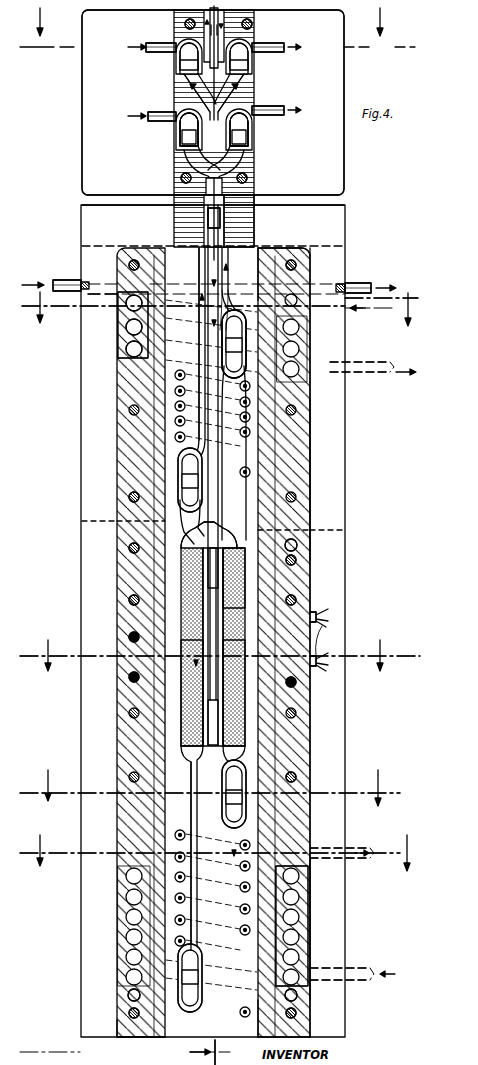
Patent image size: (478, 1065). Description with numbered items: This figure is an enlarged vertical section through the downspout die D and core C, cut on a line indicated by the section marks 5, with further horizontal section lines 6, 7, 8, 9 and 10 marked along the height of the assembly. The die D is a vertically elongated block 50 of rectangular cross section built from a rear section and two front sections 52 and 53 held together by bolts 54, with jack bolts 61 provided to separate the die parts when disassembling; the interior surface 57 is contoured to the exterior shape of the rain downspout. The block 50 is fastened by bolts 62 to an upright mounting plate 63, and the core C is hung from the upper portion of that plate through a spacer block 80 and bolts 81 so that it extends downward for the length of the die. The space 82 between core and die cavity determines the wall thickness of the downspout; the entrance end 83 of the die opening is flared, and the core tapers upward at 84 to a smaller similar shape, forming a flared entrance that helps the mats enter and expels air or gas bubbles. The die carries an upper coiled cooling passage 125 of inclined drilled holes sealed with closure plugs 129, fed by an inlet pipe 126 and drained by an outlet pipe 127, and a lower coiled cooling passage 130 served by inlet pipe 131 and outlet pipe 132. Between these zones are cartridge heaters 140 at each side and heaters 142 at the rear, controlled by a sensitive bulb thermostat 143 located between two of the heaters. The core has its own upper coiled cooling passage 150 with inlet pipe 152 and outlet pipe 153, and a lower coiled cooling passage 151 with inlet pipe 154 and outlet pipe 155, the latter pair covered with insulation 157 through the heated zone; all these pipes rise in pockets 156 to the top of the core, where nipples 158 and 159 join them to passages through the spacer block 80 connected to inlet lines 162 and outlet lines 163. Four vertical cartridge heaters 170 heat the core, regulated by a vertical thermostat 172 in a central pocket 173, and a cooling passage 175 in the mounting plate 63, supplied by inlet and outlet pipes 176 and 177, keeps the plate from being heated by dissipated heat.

The section line 5— 5 is at (208, 1053).
The section line 6— 6 is at (202, 17).
The section line 7— 7 is at (222, 317).
The section line 8— 8 is at (220, 648).
The section line 9— 9 is at (218, 843).
The section line 10— 10 is at (210, 780).
The die block 50 is at (320, 438).
The front die section 52 is at (118, 1038).
The front die section 53 is at (308, 1004).
The bolts 54 is at (292, 266).
The interior surface 57 is at (184, 706).
The jack bolts 61 is at (132, 495).
The bolts 62 is at (118, 538).
The mounting plate 63 is at (82, 168).
The spacer block 80 is at (240, 206).
The bolts 81 is at (183, 20).
The space 82 is at (238, 538).
The entrance end of die opening 83 is at (264, 250).
The tapered portion of core 84 is at (264, 238).
The coiled cooling passage 125 is at (118, 364).
The inlet pipe 126 is at (384, 300).
The outlet pipe 127 is at (364, 374).
The closure plugs 129 is at (118, 346).
The coiled cooling passage 130 is at (312, 913).
The inlet pipe 131 is at (372, 968).
The outlet pipe 132 is at (358, 848).
The heaters 140 is at (132, 599).
The heaters 142 is at (320, 640).
The thermostat 143 is at (132, 636).
The coiled cooling passage 150 is at (234, 371).
The coiled cooling passage 151 is at (176, 831).
The inlet pipe 152 is at (180, 143).
The outlet pipe 153 is at (247, 146).
The inlet pipe 154 is at (208, 93).
The outlet pipe 155 is at (229, 93).
The pockets 156 is at (206, 225).
The insulation 157 is at (210, 579).
The nipple 158 is at (180, 59).
The nipple 159 is at (248, 58).
The inlet lines 162 is at (146, 41).
The outlet lines 163 is at (285, 45).
The cartridge type heaters 170 is at (118, 522).
The thermostat 172 is at (256, 714).
The pocket 173 is at (268, 590).
The cooling passage 175 is at (100, 282).
The inlet pipe 176 is at (59, 279).
The outlet pipe 177 is at (354, 281).
The core C is at (310, 482).
The downspout die D is at (320, 884).